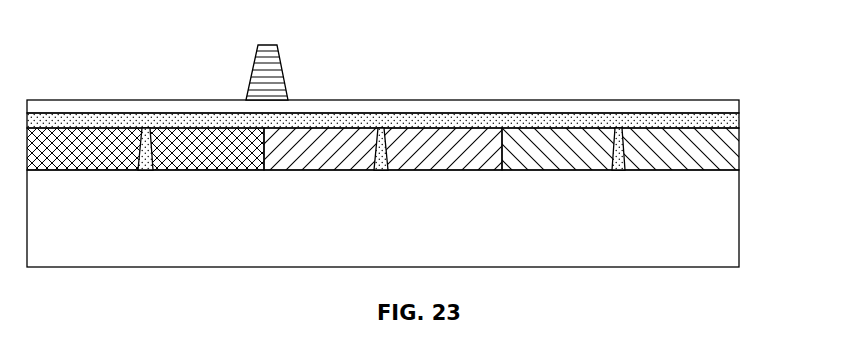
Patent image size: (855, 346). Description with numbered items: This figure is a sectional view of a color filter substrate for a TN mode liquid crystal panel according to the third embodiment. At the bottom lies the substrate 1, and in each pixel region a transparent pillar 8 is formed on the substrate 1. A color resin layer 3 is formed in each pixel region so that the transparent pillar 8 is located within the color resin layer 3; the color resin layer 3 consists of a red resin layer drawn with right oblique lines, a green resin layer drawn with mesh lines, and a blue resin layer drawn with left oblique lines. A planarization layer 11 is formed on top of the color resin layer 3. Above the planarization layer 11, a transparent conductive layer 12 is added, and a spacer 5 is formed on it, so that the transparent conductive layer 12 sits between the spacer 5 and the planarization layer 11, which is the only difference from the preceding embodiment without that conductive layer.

The substrate 1 is at (740, 216).
The color resin layer 3 is at (655, 150).
The spacer 5 is at (268, 77).
The transparent pillar 8 is at (145, 148).
The planarization layer 11 is at (573, 120).
The transparent conductive layer 12 is at (452, 112).